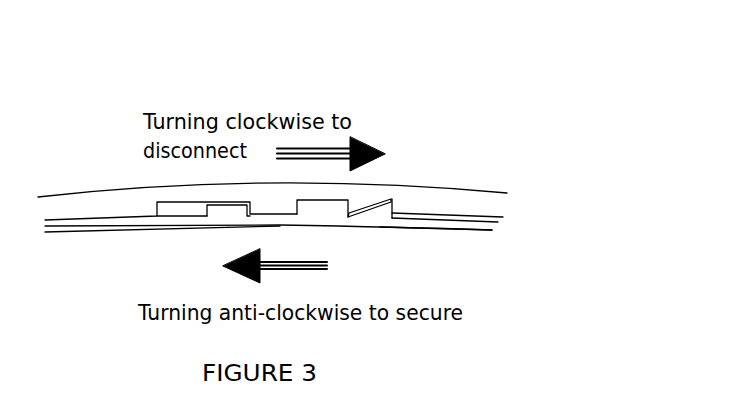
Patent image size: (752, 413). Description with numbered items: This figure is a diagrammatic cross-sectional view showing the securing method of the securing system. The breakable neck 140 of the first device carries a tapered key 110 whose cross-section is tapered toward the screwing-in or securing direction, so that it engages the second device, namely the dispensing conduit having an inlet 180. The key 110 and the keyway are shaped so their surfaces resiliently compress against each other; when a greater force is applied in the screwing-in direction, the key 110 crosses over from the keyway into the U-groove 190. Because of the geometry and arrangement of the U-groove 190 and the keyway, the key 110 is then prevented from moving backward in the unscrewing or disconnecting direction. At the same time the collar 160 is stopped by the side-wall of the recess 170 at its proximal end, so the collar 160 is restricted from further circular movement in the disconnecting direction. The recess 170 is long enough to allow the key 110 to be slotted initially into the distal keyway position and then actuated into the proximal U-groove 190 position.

The tapered key 110 is at (382, 213).
The breakable neck 140 is at (403, 228).
The collar 160 is at (227, 211).
The recess 170 is at (157, 202).
The inlet 180 is at (412, 203).
The U-groove 190 is at (312, 200).